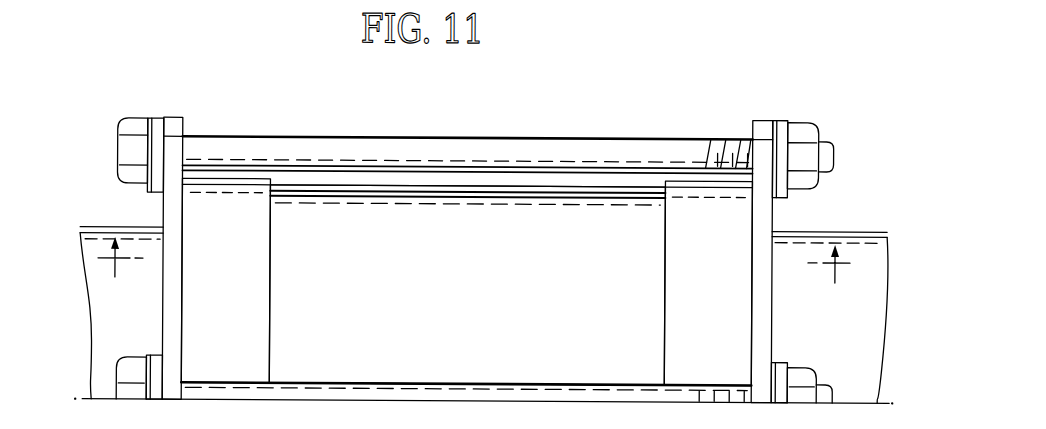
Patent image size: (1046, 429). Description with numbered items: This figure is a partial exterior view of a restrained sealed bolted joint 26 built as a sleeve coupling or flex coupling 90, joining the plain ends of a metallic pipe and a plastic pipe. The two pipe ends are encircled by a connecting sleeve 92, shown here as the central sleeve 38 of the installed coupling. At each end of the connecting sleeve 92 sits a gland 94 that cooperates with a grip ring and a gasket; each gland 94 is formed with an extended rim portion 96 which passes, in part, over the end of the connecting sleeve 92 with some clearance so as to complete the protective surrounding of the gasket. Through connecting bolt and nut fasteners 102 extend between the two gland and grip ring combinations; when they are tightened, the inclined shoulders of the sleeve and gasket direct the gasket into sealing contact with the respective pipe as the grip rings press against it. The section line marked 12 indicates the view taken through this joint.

The section line 12- 12 is at (480, 260).
The restrained sealed bolted joint 26 is at (779, 212).
The sleeve 38 is at (420, 292).
The flex coupling 90 is at (534, 187).
The connecting sleeve 92 is at (590, 292).
The gland 94 is at (181, 116).
The extended rim portion 96 is at (236, 308).
The through connecting bolt and nut fasteners 102 is at (368, 135).